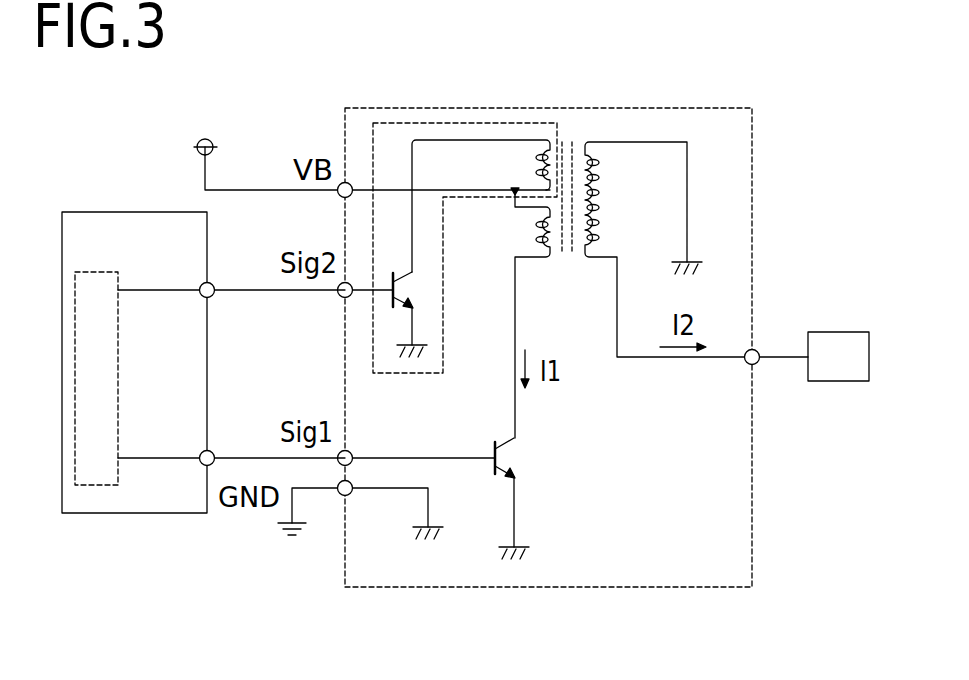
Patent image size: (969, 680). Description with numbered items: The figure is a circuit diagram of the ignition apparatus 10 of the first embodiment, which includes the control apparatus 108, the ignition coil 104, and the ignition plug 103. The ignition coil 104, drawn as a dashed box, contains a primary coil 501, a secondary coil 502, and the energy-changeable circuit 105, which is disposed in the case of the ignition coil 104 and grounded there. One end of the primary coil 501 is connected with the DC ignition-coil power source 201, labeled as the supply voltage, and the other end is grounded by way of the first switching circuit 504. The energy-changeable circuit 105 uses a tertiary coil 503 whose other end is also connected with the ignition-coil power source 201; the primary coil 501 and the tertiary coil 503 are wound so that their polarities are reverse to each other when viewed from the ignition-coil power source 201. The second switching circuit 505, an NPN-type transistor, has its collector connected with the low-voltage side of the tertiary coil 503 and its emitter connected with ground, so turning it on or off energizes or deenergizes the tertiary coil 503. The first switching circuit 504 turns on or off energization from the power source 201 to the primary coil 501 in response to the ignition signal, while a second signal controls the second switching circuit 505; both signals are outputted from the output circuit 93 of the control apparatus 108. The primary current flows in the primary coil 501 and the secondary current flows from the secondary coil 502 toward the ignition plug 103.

The ignition apparatus 10 is at (598, 321).
The ignition coil 104 is at (598, 342).
The energy-changeable circuit 105 is at (415, 239).
The DC ignition-coil power source 201 is at (269, 128).
The tertiary coil 503 is at (481, 206).
The primary coil 501 is at (501, 313).
The secondary coil 502 is at (668, 249).
The ignition plug 103 is at (833, 396).
The second switching circuit 505 is at (422, 324).
The first switching circuit 504 is at (480, 491).
The control apparatus 108 is at (203, 401).
The output circuit 93 is at (129, 355).